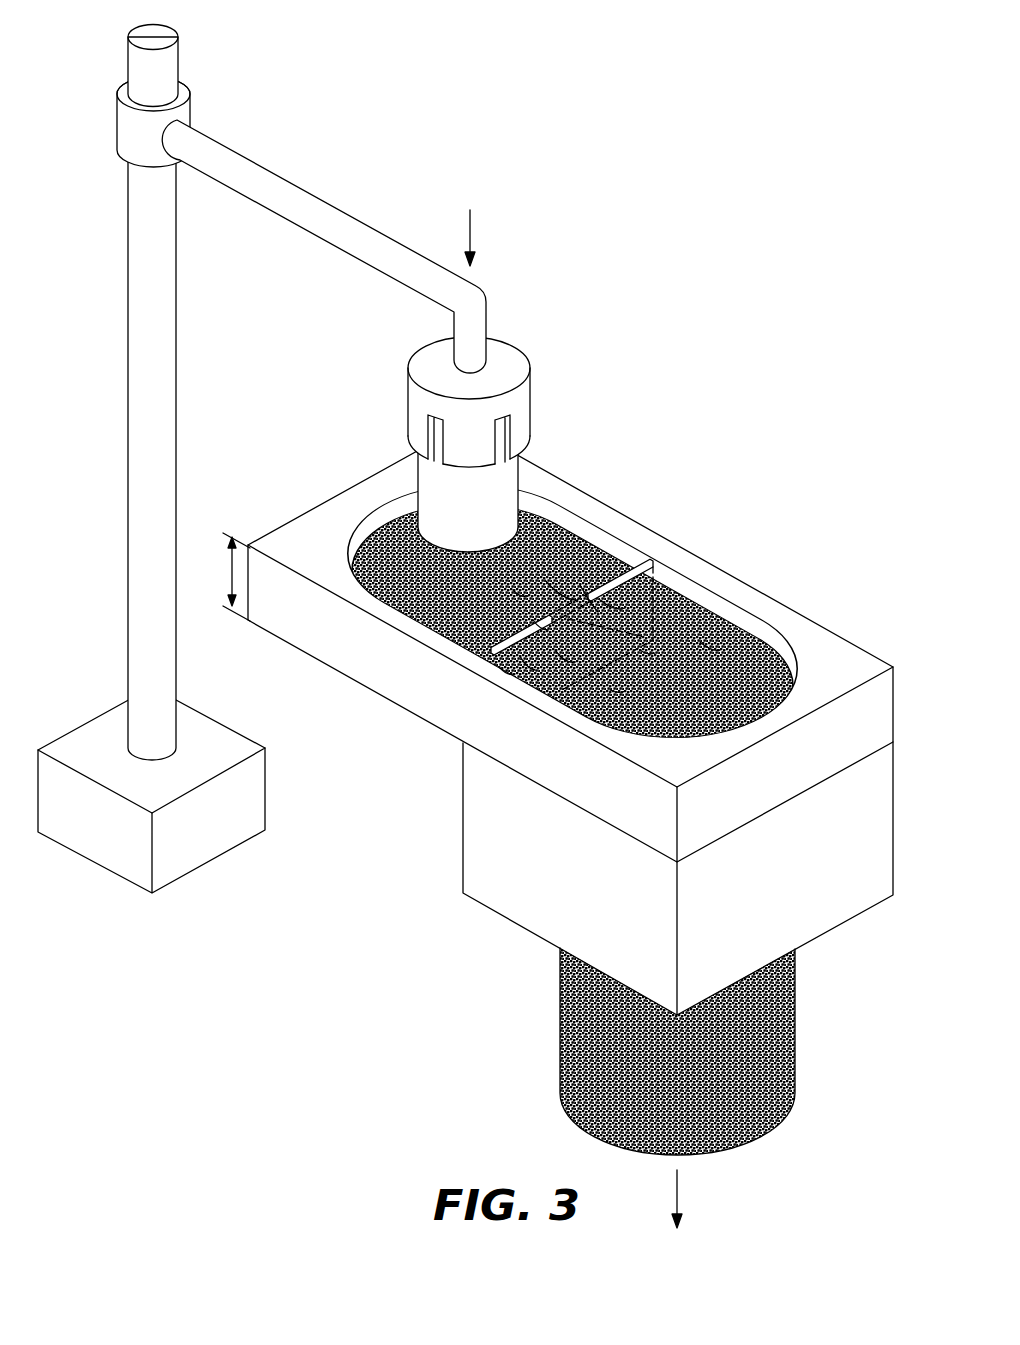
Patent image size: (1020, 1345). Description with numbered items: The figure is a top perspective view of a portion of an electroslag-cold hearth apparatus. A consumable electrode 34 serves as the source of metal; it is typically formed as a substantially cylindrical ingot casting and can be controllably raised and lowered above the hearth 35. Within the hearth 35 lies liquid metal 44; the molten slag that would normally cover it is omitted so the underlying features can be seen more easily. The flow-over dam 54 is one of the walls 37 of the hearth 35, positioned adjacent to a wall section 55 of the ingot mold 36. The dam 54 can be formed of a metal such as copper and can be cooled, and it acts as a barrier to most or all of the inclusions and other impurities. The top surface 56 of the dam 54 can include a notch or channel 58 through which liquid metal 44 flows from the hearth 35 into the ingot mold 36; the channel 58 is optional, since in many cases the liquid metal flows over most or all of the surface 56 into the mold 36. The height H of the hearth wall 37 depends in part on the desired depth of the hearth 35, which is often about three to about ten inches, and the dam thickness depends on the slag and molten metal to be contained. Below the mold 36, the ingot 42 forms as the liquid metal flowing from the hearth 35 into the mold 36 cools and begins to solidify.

The consumable electrode 34 is at (507, 472).
The hearth 35 is at (605, 518).
The ingot mold 36 is at (813, 634).
The hearth wall 37 is at (345, 658).
The ingot 42 is at (780, 1027).
The liquid metal 44 is at (379, 570).
The flow-over dam 54 is at (653, 568).
The wall section 55 is at (707, 577).
The top surface 56 is at (497, 650).
The channel 58 is at (567, 618).
The height H is at (231, 572).